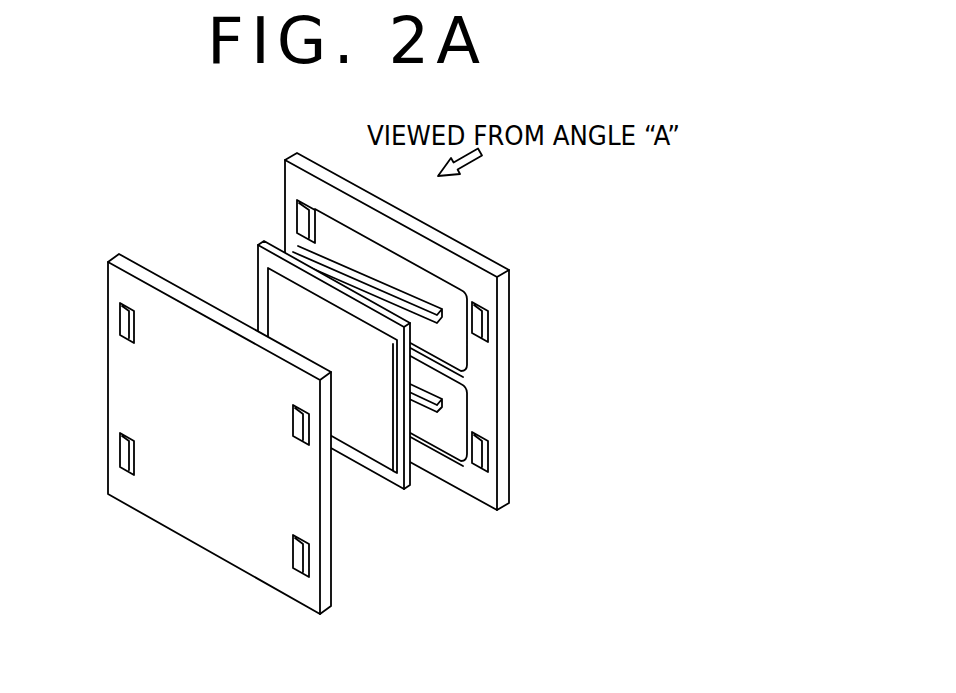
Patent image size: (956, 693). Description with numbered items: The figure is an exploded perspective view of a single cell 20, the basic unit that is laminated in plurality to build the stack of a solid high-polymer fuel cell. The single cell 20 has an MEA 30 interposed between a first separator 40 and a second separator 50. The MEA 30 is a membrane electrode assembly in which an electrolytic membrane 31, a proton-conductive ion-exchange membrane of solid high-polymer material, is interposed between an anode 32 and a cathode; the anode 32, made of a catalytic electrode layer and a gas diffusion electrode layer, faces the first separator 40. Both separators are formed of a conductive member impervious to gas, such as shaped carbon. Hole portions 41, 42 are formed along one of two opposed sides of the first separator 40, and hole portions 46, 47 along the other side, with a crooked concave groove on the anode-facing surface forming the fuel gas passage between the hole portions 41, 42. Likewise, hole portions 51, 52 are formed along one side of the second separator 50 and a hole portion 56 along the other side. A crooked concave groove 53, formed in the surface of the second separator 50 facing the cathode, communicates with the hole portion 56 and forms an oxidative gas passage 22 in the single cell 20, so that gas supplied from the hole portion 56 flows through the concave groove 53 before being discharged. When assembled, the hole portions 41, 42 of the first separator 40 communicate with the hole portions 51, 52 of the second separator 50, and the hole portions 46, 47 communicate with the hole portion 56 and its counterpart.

The single cell 20 is at (315, 371).
The MEA 30 is at (352, 420).
The electrolytic membrane 31 is at (393, 480).
The anode 32 is at (372, 452).
The first separator 40 is at (184, 434).
The hole portion 41 is at (293, 423).
The hole portion 42 is at (293, 562).
The hole portion 46 is at (120, 322).
The hole portion 47 is at (120, 452).
The second separator 50 is at (404, 369).
The hole portion 51 is at (487, 325).
The hole portion 52 is at (487, 455).
The concave groove 53 is at (443, 328).
The oxidative gas passage 22 is at (413, 282).
The hole portion 56 is at (308, 222).